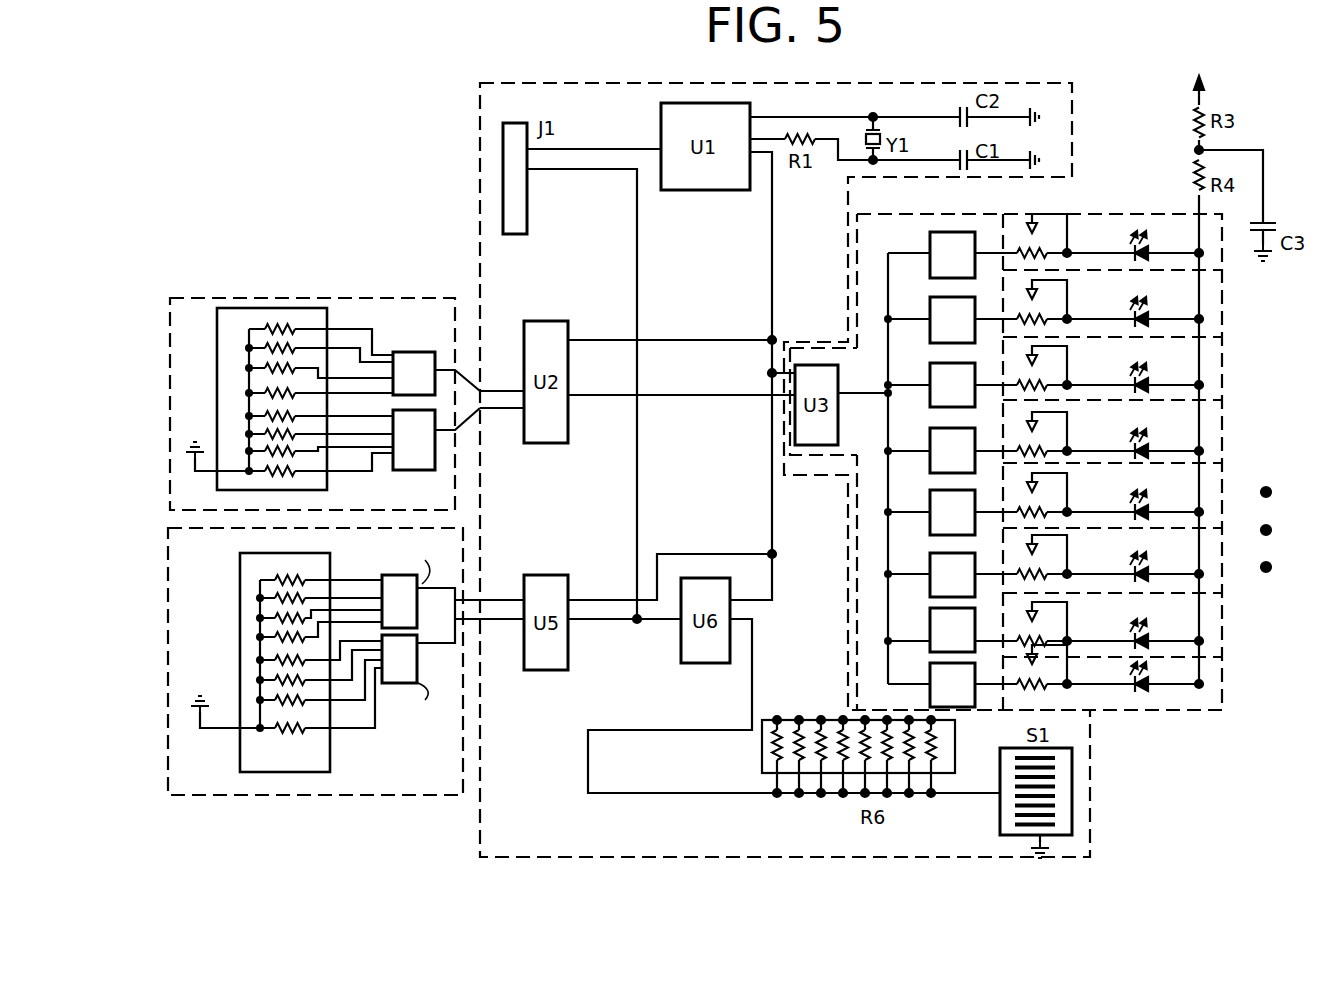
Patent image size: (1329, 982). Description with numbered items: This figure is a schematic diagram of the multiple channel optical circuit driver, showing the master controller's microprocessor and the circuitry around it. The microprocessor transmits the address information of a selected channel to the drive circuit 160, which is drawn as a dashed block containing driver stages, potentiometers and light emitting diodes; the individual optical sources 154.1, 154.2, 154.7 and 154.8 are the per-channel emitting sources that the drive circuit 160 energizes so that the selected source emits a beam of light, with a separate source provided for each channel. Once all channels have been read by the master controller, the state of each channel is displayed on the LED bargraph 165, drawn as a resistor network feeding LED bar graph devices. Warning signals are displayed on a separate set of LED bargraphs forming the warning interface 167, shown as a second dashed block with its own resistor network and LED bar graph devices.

The drive circuit 160 is at (945, 214).
The LED bargraph 165 is at (240, 298).
The warning interface 167 is at (168, 630).
The optical source 154.1 is at (1224, 666).
The optical source 154.2 is at (1222, 612).
The optical source 154.7 is at (1222, 318).
The optical source 154.8 is at (1222, 262).